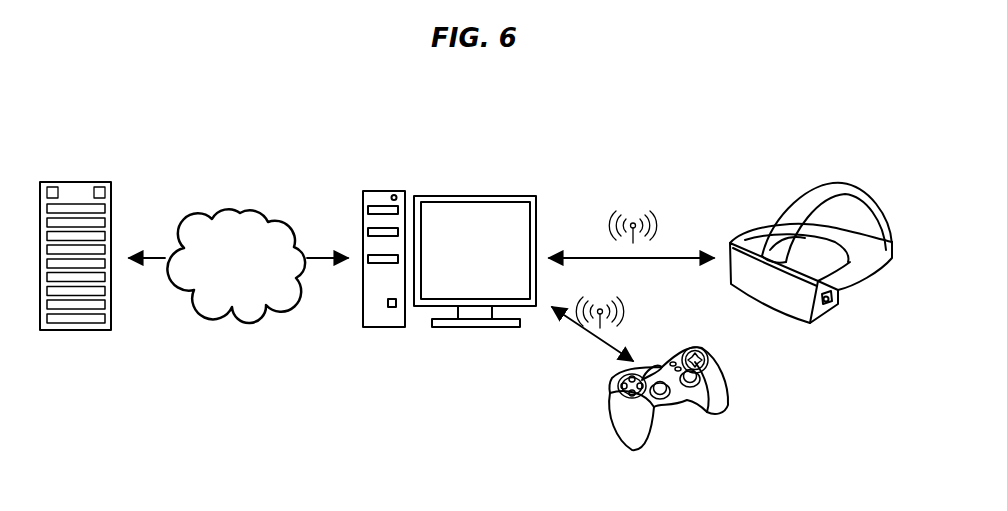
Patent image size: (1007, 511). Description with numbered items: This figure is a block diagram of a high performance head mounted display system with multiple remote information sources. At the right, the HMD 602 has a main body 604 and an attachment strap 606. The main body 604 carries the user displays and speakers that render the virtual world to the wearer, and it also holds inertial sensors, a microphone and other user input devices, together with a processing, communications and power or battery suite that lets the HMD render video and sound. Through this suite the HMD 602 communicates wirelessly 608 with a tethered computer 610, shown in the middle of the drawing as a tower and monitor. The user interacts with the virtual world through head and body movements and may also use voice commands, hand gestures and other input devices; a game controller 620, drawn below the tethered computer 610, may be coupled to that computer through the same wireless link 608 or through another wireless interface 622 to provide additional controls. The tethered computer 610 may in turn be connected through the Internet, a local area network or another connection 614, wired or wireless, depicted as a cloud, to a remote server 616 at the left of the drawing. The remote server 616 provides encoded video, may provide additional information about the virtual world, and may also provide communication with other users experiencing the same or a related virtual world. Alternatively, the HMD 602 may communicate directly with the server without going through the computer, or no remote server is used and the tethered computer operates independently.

The head mounted display 602 is at (830, 280).
The main body 604 is at (753, 296).
The attachment strap 606 is at (872, 207).
The wireless communication 608 is at (684, 255).
The tethered computer 610 is at (505, 178).
The connection 614 is at (228, 207).
The remote server 616 is at (126, 193).
The game controller 620 is at (623, 415).
The wireless interface 622 is at (588, 332).